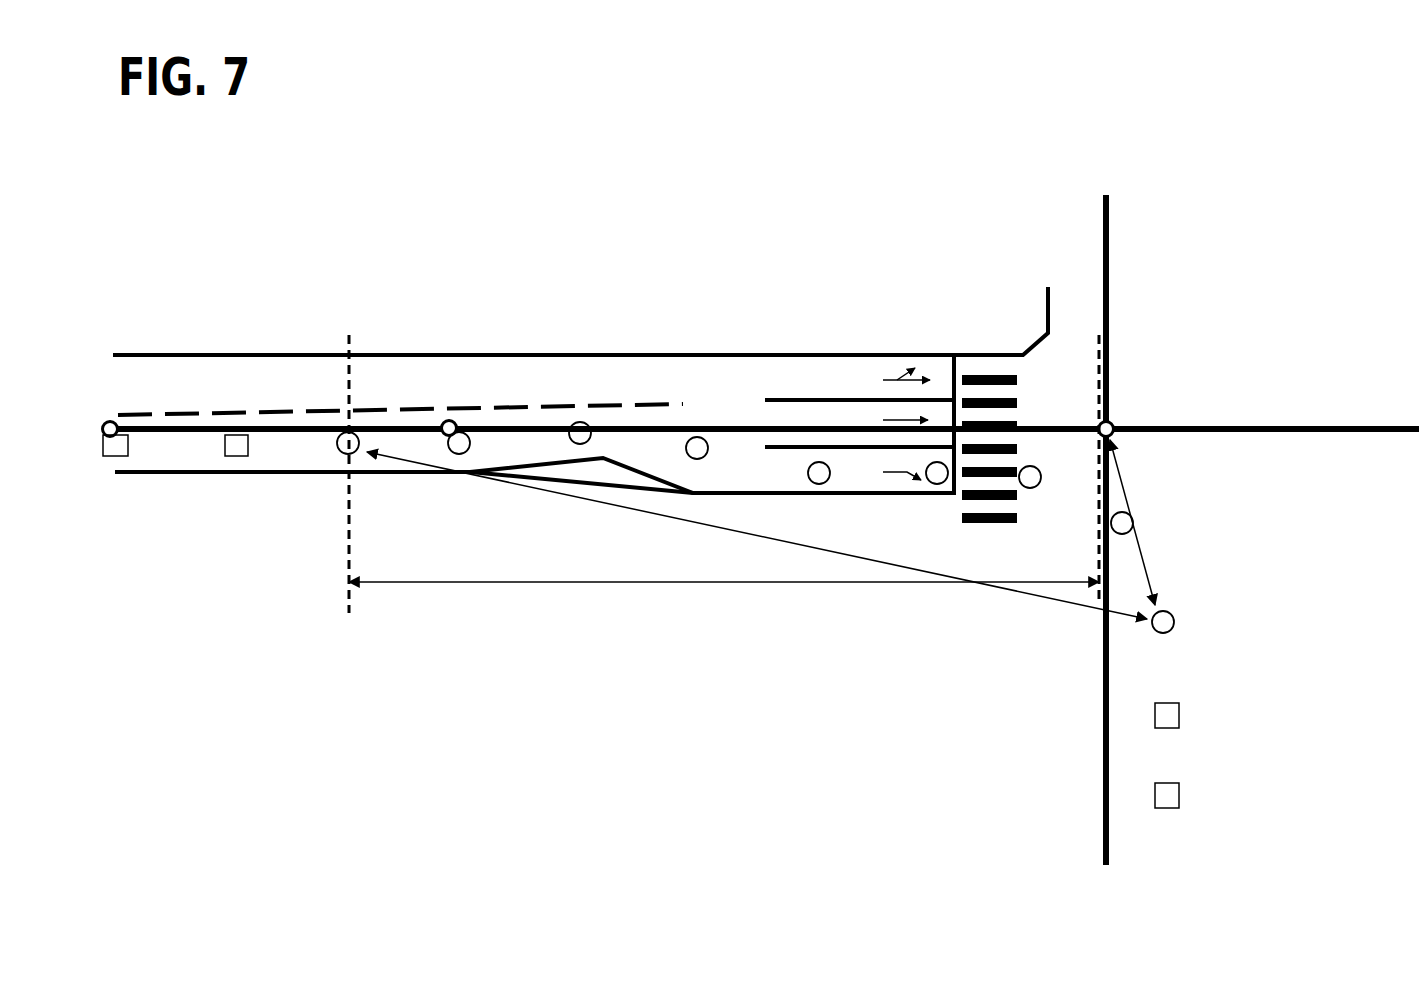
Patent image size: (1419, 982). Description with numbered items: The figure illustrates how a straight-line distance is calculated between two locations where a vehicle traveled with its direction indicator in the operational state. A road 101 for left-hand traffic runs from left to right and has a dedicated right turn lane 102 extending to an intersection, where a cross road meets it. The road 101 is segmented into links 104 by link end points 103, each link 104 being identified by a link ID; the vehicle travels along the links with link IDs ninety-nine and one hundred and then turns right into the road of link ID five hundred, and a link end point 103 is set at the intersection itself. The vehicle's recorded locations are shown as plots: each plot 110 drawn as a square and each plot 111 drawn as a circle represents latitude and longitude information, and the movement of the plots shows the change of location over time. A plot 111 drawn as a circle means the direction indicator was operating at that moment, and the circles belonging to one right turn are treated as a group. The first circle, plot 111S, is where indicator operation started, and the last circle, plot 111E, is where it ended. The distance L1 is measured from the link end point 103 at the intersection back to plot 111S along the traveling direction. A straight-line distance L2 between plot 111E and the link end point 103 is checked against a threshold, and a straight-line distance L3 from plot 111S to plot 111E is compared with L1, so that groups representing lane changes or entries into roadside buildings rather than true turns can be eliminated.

The road 101 is at (749, 357).
The dedicated right turn lane 102 is at (865, 465).
The link end point 103 is at (112, 422).
The link 104 is at (303, 425).
The plot depicted with a square 110 is at (113, 457).
The plot depicted with a circle 111 is at (576, 422).
The plot at which the operational state of the direction indicator is started 111S is at (345, 455).
The plot at which the operational state of the direction indicator is ended 111E is at (1175, 621).
The straight-line distance L1 is at (724, 599).
The straight-line distance L2 is at (1140, 522).
The straight-line distance L3 is at (757, 535).